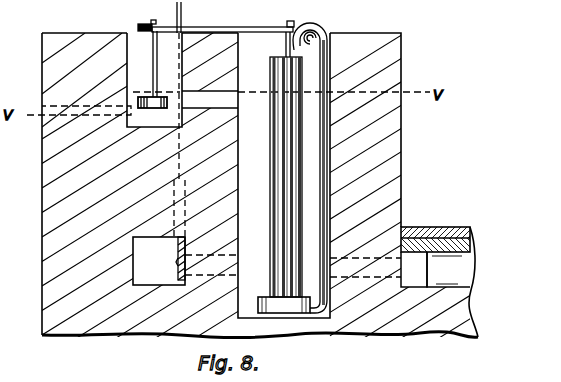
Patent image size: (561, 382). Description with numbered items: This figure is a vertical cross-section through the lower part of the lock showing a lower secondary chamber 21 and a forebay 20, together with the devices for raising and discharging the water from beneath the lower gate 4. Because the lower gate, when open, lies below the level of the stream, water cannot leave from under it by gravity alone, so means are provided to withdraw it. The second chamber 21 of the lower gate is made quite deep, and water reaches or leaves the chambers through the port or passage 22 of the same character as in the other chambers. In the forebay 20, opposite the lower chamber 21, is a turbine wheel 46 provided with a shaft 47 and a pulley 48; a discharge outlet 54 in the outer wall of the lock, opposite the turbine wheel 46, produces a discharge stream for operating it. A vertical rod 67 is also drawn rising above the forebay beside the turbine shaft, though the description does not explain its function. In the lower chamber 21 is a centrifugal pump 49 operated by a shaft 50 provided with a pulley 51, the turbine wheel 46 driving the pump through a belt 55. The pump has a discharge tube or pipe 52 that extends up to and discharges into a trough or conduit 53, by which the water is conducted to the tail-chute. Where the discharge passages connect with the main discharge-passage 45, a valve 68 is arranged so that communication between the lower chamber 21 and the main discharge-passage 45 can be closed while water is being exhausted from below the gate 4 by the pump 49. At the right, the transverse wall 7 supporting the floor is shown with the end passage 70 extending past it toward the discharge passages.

The lower gate 4 is at (437, 233).
The transverse wall 7 is at (448, 269).
The forebay 20 is at (154, 80).
The second chamber 21 is at (284, 175).
The port or passage 22 is at (210, 101).
The main discharge-passage 45 is at (185, 261).
The turbine wheel 46 is at (152, 102).
The shaft 47 is at (163, 64).
The pulley 48 is at (146, 19).
The centrifugal pump 49 is at (284, 305).
The shaft 50 is at (285, 40).
The pulley 51 is at (284, 17).
The discharge tube or pipe 52 is at (310, 33).
The trough or conduit 53 is at (328, 45).
The discharge outlet 54 is at (95, 117).
The belt 55 is at (222, 20).
The rod 67 is at (186, 119).
The valve 68 is at (174, 259).
The end passage 70 is at (378, 269).